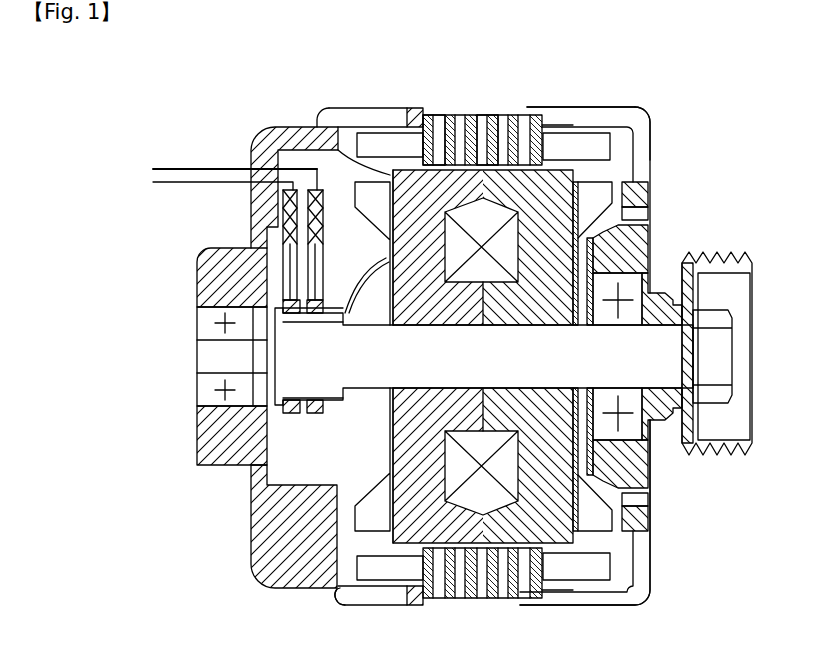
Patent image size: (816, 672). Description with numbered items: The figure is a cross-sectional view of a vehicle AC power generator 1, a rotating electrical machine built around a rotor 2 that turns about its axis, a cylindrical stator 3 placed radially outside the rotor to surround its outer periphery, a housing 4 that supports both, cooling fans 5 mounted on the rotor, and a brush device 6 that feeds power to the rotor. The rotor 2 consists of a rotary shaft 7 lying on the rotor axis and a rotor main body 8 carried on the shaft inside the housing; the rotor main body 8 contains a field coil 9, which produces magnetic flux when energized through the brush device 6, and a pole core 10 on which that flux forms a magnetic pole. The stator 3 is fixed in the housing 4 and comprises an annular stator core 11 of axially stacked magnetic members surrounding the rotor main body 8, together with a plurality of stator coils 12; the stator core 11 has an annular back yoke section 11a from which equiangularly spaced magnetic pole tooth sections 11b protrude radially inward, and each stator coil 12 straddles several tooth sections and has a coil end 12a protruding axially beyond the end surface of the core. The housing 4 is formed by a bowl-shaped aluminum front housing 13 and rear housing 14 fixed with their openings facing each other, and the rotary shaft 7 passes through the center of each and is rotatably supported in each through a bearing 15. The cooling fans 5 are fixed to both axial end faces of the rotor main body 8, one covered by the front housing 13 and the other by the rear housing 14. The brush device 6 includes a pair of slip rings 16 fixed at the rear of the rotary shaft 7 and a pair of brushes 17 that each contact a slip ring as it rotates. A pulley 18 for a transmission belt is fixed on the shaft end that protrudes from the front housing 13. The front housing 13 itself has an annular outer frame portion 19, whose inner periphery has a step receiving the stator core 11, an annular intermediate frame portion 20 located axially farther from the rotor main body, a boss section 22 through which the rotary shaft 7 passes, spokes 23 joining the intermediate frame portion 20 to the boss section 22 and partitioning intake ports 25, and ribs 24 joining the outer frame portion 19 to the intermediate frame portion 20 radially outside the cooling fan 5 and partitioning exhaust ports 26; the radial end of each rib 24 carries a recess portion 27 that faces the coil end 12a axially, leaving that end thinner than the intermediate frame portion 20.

The vehicle AC power generator 1 is at (327, 102).
The rotor 2 is at (338, 150).
The stator 3 is at (367, 127).
The housing 4 is at (263, 130).
The cooling fan 5 is at (317, 588).
The brush device 6 is at (273, 272).
The rotary shaft 7 is at (376, 384).
The rotor main body 8 is at (393, 588).
The field coil 9 is at (463, 488).
The pole core 10 is at (575, 540).
The stator core 11 is at (507, 115).
The back yoke section 11a is at (440, 122).
The magnetic pole tooth section 11b is at (485, 155).
The stator coil 12 is at (400, 127).
The coil end 12a is at (570, 147).
The front housing 13 is at (653, 590).
The rear housing 14 is at (260, 575).
The bearing 15 is at (202, 395).
The slip ring 16 is at (292, 415).
The brush 17 is at (283, 290).
The pulley 18 is at (757, 440).
The outer frame portion 19 is at (543, 100).
The intermediate frame portion 20 is at (653, 197).
The boss section 22 is at (653, 240).
The spoke 23 is at (648, 212).
The rib 24 is at (647, 110).
The intake port 25 is at (640, 215).
The exhaust port 26 is at (613, 103).
The recess portion 27 is at (628, 157).